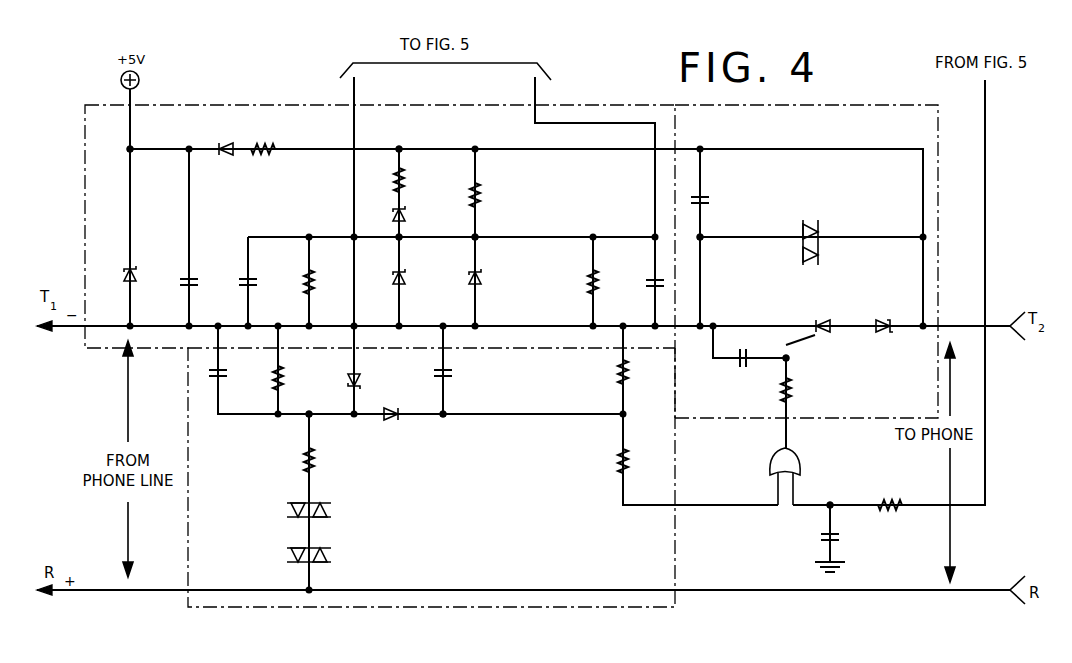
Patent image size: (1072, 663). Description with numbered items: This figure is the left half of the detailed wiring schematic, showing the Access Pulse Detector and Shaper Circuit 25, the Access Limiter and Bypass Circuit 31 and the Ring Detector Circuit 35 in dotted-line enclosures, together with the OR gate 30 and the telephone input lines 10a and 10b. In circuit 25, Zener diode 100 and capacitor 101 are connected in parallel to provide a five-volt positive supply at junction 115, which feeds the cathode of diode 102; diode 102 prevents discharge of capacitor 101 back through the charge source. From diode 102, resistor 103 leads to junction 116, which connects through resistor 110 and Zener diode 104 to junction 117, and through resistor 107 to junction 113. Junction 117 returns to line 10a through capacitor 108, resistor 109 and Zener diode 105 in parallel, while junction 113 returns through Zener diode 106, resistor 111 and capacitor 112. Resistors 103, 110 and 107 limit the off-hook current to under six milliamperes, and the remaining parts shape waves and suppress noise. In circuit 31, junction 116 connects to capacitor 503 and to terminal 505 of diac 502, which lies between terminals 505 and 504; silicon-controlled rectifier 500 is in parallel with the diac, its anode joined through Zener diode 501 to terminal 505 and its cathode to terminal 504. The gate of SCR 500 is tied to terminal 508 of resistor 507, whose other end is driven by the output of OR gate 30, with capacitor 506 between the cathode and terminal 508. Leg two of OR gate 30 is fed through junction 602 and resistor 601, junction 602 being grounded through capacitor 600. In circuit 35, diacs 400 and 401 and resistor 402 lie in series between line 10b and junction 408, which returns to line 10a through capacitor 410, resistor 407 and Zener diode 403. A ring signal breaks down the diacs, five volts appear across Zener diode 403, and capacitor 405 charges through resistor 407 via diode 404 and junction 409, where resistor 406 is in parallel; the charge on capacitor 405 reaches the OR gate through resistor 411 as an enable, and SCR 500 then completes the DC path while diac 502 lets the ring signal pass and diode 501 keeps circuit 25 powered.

The Access Pulse Detector and Shaper Circuit 25 is at (178, 105).
The Access Limiter and Bypass Circuit 31 is at (862, 105).
The Ring Detector Circuit 35 is at (677, 553).
The OR gate 30 is at (800, 464).
The telephone input line 10a is at (75, 329).
The telephone line 10b is at (88, 592).
The Zener diode 100 is at (122, 275).
The capacitor 101 is at (175, 280).
The diode 102 is at (225, 159).
The resistor 103 is at (263, 138).
The Zener diode 104 is at (383, 217).
The Zener diode 105 is at (383, 278).
The Zener diode 106 is at (492, 278).
The resistor 107 is at (458, 195).
The capacitor 108 is at (236, 276).
The resistor 109 is at (293, 282).
The resistor 110 is at (383, 180).
The resistor 111 is at (577, 282).
The capacitor 112 is at (637, 289).
The junction 113 is at (477, 235).
The junction 115 is at (132, 147).
The junction 116 is at (401, 147).
The junction 117 is at (401, 239).
The diac 400 is at (293, 512).
The diac 401 is at (293, 557).
The resistor 402 is at (291, 460).
The Zener diode 403 is at (367, 374).
The diode 404 is at (391, 426).
The capacitor 405 is at (456, 377).
The resistor 406 is at (605, 373).
The resistor 407 is at (295, 378).
The junction 408 is at (312, 416).
The junction 409 is at (445, 416).
The capacitor 410 is at (226, 381).
The resistor 411 is at (605, 461).
The silicon-controlled rectifier 500 is at (823, 318).
The Zener diode 501 is at (881, 317).
The diac 502 is at (798, 228).
The capacitor 503 is at (716, 201).
The terminal 504 is at (702, 240).
The terminal 505 is at (921, 236).
The capacitor 506 is at (727, 367).
The resistor 507 is at (804, 390).
The terminal 508 is at (790, 358).
The capacitor 600 is at (810, 539).
The resistor 601 is at (890, 495).
The junction 602 is at (832, 503).